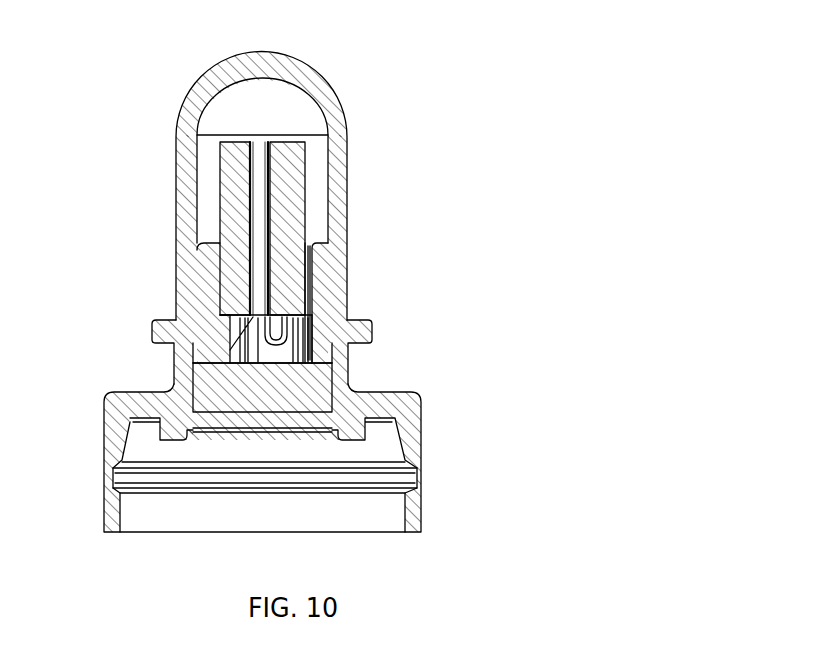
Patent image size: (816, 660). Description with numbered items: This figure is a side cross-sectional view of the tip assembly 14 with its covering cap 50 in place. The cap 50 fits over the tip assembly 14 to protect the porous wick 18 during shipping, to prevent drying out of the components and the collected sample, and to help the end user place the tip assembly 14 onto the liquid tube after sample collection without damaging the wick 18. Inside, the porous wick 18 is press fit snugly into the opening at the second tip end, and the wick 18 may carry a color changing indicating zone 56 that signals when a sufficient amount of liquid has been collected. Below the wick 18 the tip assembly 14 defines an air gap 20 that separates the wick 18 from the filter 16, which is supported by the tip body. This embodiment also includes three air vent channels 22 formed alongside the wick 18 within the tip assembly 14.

The tip assembly 14 is at (142, 160).
The cap 50 is at (342, 123).
The porous wick 18 is at (293, 208).
The color changing indicating zone 56 is at (252, 204).
The air vent channel 22 is at (312, 280).
The air gap 20 is at (236, 341).
The filter 16 is at (287, 394).